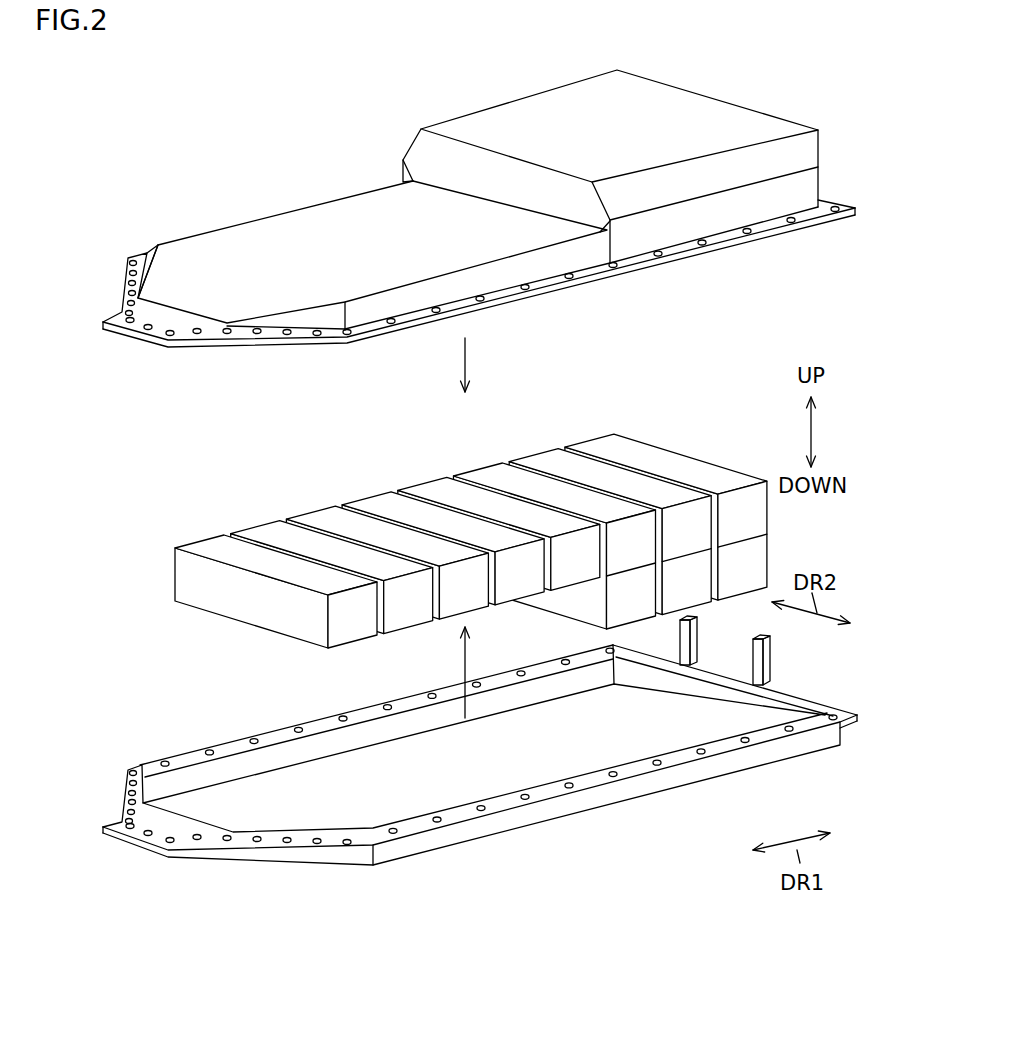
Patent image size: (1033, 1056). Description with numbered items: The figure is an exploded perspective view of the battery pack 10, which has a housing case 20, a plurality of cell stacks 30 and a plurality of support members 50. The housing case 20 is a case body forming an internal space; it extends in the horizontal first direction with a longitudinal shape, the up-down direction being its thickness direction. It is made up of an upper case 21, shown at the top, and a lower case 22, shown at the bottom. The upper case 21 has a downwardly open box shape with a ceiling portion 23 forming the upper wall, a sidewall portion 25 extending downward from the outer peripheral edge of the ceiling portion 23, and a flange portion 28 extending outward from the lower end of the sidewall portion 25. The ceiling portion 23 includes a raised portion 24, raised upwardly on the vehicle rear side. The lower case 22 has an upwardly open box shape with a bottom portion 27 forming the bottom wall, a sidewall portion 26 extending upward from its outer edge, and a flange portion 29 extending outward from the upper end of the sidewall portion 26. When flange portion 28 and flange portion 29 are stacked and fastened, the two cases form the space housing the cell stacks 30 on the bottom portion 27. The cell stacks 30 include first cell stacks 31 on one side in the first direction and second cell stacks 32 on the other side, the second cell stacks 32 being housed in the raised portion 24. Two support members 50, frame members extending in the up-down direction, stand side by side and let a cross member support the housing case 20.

The battery pack 10 is at (448, 458).
The housing case 20 is at (448, 466).
The upper case 21 is at (466, 258).
The lower case 22 is at (467, 773).
The ceiling portion 23 is at (300, 233).
The raised portion 24 is at (620, 95).
The sidewall portion 25 is at (530, 263).
The sidewall portion 26 is at (562, 805).
The bottom portion 27 is at (408, 790).
The flange portion 28 is at (763, 227).
The flange portion 29 is at (632, 767).
The cell stack 30 is at (473, 506).
The first cell stack 31 is at (357, 623).
The second cell stack 32 is at (523, 432).
The support member 50 is at (702, 642).